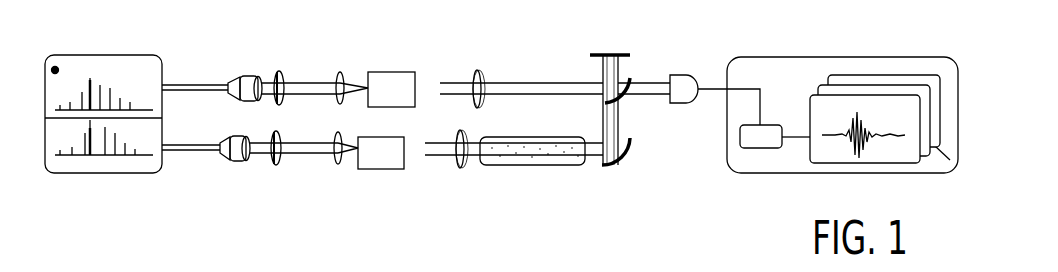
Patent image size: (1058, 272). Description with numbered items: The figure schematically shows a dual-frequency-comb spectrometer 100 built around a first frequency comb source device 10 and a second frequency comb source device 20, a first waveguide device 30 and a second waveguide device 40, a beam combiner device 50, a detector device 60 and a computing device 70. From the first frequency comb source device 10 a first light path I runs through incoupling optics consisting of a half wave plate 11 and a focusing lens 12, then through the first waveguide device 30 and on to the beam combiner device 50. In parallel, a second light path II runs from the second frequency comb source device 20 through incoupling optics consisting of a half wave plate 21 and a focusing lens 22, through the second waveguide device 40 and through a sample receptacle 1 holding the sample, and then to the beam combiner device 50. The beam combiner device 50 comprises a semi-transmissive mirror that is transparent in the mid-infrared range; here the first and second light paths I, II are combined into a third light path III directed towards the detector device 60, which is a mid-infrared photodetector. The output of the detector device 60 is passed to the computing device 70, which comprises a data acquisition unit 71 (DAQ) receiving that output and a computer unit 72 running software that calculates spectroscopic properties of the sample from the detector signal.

The dual-frequency-comb spectrometer 100 is at (306, 87).
The first frequency comb source device 10 is at (125, 66).
The second frequency comb source device 20 is at (125, 163).
The half wave plate 11 is at (277, 75).
The focusing lens 12 is at (340, 82).
The half wave plate 21 is at (272, 153).
The focusing lens 22 is at (332, 153).
The first waveguide device 30 is at (392, 80).
The second waveguide device 40 is at (387, 158).
The sample receptacle 1 is at (547, 155).
The beam combiner device 50 is at (600, 82).
The detector device 60 is at (695, 78).
The computing device 70 is at (828, 63).
The data acquisition unit 71 is at (740, 145).
The computer unit 72 is at (835, 152).
The first light path I is at (530, 83).
The second light path II is at (445, 152).
The third light path III is at (652, 83).